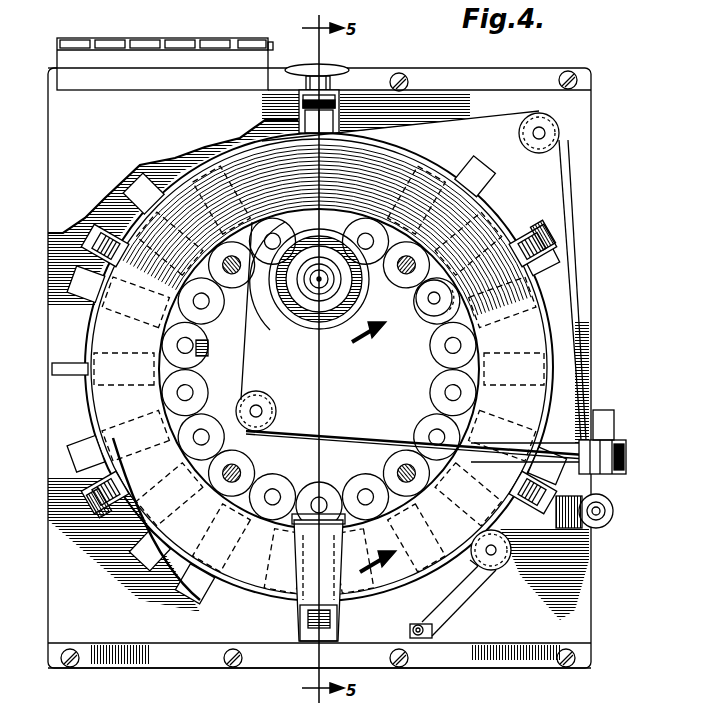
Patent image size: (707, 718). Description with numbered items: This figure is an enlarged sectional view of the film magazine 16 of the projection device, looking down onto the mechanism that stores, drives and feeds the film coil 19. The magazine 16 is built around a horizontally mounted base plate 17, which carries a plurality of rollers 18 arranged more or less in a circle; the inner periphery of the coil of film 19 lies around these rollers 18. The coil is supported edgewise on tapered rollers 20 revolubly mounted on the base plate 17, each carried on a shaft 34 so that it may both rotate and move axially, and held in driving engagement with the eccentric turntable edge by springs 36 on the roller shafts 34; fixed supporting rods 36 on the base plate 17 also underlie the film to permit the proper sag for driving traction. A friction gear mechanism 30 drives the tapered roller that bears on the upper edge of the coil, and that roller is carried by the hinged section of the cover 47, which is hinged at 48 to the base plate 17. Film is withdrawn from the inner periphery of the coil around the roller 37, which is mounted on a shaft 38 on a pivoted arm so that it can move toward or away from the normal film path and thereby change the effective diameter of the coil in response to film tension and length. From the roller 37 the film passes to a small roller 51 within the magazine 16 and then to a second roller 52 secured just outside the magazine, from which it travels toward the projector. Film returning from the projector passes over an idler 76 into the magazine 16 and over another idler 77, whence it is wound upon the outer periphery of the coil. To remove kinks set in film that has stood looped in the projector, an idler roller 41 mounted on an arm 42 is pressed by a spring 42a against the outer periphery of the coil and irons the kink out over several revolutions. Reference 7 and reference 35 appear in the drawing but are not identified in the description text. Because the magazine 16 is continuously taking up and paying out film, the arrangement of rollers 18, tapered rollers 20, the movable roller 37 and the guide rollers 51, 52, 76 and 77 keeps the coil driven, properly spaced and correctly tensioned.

The roller cage arm 7 is at (113, 440).
The magazine 16 is at (596, 212).
The base plate 17 is at (82, 603).
The rollers 18 is at (443, 344).
The coil of film 19 is at (100, 392).
The rollers 20 is at (335, 133).
The friction gear mechanism 30 is at (345, 68).
The shafts 34 is at (430, 290).
The spring clips 35 is at (560, 247).
The springs 36 is at (66, 370).
The roller 37 is at (288, 320).
The shaft 38 is at (319, 284).
The idler roller 41 is at (505, 566).
The arm 42 is at (448, 620).
The spring 42a is at (432, 632).
The cover 47 is at (100, 143).
The hinge 48 is at (262, 40).
The small roller 51 is at (278, 414).
The second roller 52 is at (628, 458).
The idler 76 is at (614, 512).
The idler 77 is at (562, 130).